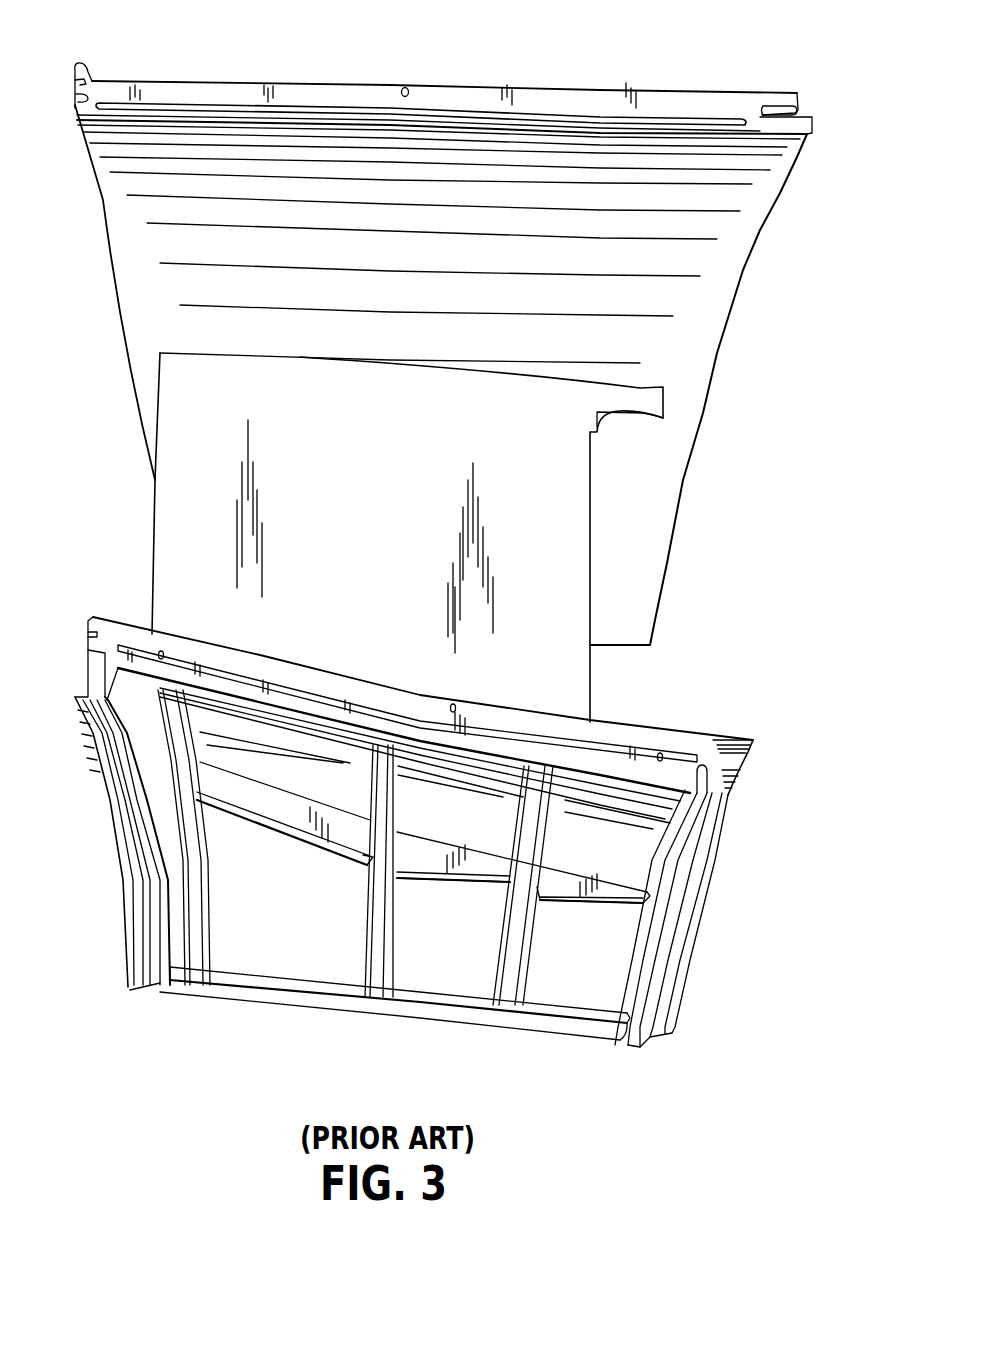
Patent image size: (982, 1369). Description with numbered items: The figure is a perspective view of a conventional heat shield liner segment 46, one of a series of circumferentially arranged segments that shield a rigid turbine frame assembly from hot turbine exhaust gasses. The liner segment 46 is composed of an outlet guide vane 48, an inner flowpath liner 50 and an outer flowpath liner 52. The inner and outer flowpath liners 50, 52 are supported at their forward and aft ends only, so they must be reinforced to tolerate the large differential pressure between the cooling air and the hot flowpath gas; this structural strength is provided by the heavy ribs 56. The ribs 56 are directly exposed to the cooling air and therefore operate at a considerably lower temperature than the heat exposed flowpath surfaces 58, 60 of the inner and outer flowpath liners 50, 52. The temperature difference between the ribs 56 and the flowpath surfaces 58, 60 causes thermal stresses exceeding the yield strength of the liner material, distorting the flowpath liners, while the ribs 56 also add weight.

The liner segment 46 is at (509, 72).
The outlet guide vane 48 is at (400, 568).
The inner flowpath liner 50 is at (687, 743).
The outer flowpath liner 52 is at (807, 134).
The heavy ribs 56 is at (693, 103).
The flowpath surface of inner flowpath liner 58 is at (550, 717).
The flowpath surface of outer flowpath liner 60 is at (463, 238).